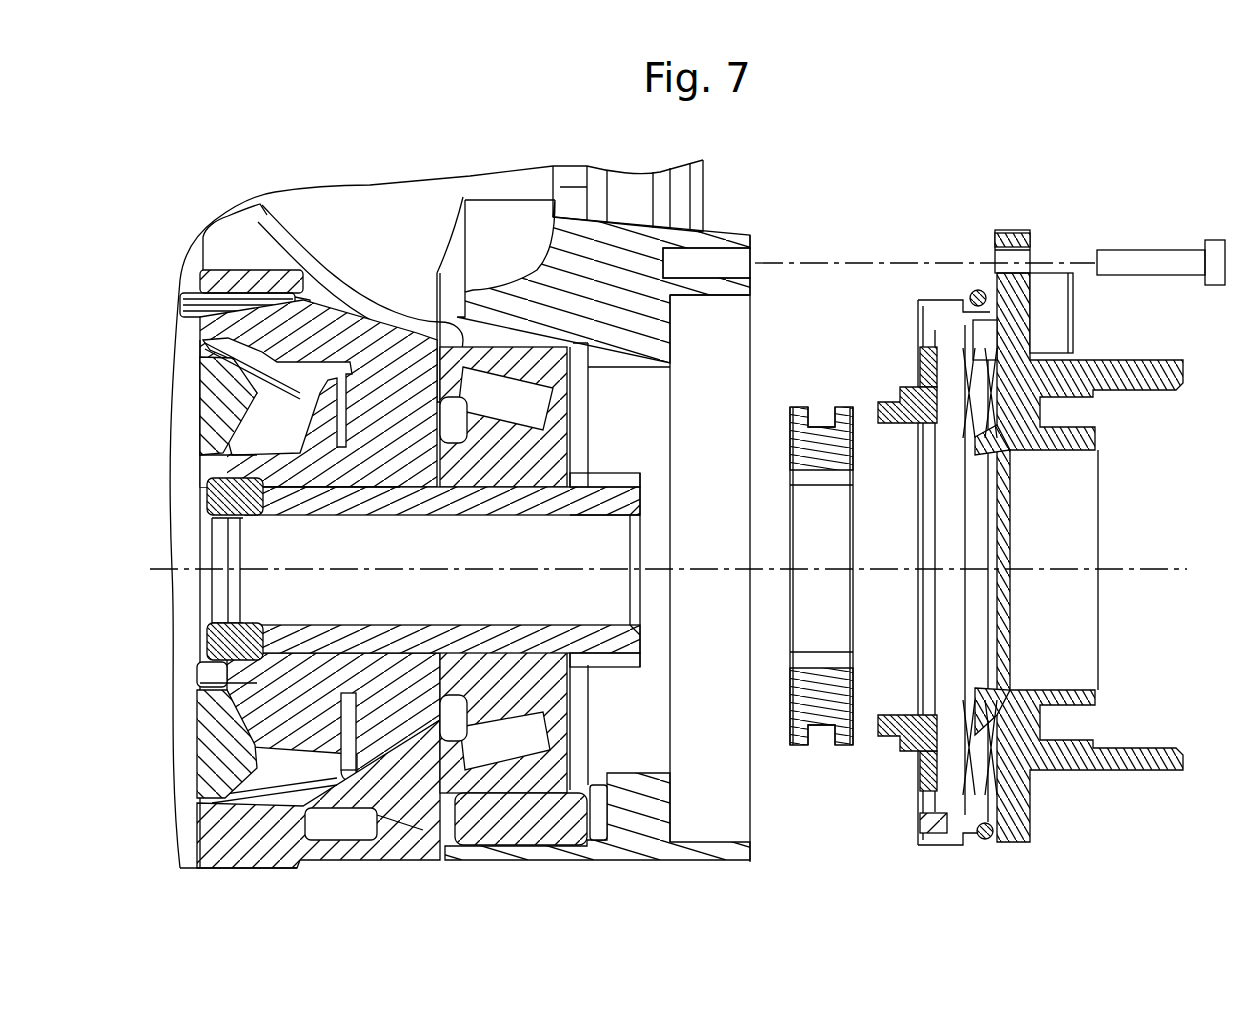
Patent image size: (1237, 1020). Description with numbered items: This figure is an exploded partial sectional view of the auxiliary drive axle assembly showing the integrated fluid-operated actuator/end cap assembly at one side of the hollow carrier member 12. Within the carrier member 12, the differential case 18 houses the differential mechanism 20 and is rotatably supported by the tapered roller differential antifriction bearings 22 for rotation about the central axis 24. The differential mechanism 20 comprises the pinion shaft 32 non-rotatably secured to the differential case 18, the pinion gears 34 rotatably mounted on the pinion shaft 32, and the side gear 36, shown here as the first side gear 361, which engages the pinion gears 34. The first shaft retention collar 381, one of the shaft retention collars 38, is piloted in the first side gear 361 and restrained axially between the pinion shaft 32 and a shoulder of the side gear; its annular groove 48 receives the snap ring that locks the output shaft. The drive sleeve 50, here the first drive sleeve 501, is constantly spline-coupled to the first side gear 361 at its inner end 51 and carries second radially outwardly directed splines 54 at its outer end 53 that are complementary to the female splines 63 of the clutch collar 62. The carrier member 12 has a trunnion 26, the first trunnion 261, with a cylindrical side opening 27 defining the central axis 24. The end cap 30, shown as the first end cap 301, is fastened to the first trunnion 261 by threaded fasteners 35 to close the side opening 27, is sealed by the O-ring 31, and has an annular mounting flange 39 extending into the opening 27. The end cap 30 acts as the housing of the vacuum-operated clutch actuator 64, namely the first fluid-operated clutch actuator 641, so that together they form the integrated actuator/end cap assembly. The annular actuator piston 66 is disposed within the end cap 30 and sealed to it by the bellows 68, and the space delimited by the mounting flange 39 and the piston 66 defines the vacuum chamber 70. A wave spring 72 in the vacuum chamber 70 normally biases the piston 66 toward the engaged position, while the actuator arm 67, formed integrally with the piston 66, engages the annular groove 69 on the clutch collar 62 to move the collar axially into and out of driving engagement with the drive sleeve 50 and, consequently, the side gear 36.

The carrier member 12 is at (572, 175).
The differential case 18 is at (362, 803).
The differential mechanism 20 is at (188, 783).
The differential antifriction bearings 22 is at (440, 792).
The central axis 24 is at (1165, 566).
The trunnion 26 is at (719, 517).
The first trunnion 261 is at (735, 238).
The side opening 27 is at (707, 297).
The end cap 30 is at (1079, 536).
The first end cap 301 is at (1033, 815).
The O-ring 31 is at (985, 842).
The pinion shaft 32 is at (190, 615).
The pinion gears 34 is at (215, 405).
The threaded fasteners 35 is at (1163, 247).
The side gear 36 is at (320, 540).
The first side gear 361 is at (322, 648).
The shaft retention collar 38 is at (188, 582).
The first shaft retention collar 381 is at (220, 507).
The mounting flange 39 is at (935, 835).
The annular groove 48 is at (240, 608).
The drive sleeve 50 is at (442, 570).
The first drive sleeve 501 is at (483, 500).
The inner end 51 is at (288, 505).
The outer end 53 is at (630, 500).
The second radially outwardly directed splines 54 is at (608, 478).
The clutch collar 62 is at (797, 722).
The female splines 63 is at (817, 480).
The vacuum-operated clutch actuator 64 is at (939, 602).
The first fluid-operated clutch actuator 641 is at (903, 792).
The actuator piston 66 is at (920, 365).
The actuator arm 67 is at (885, 420).
The bellows 68 is at (955, 432).
The annular groove 69 is at (808, 398).
The vacuum chamber 70 is at (988, 343).
The wave spring 72 is at (993, 767).